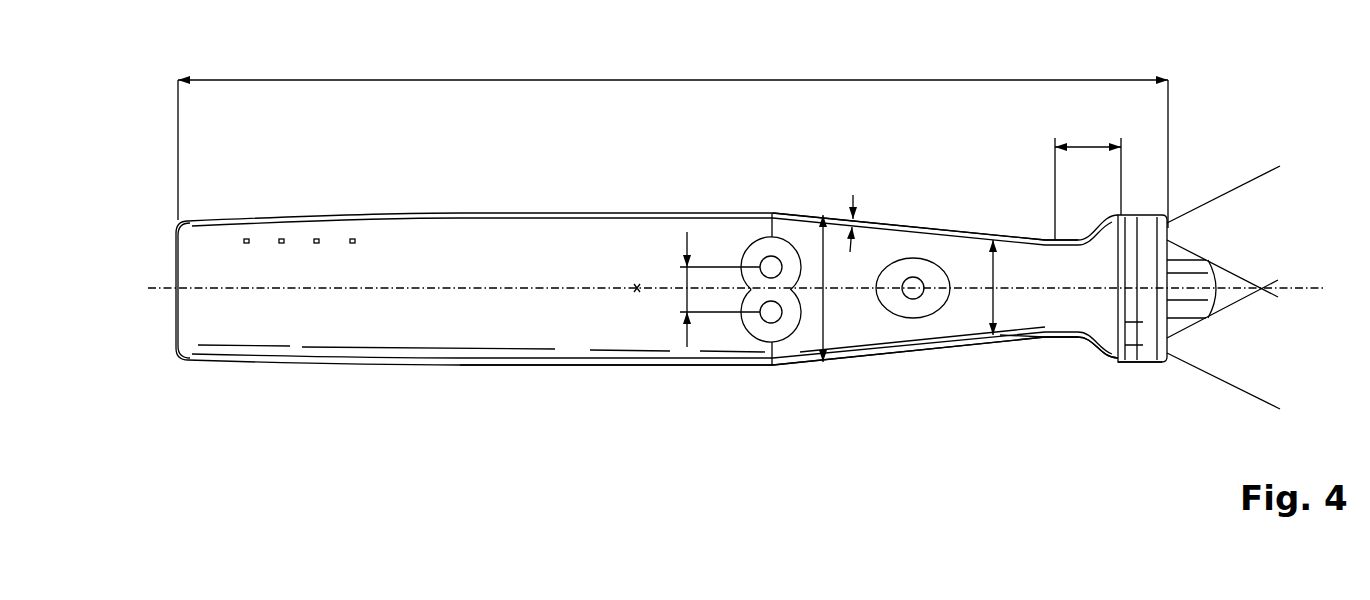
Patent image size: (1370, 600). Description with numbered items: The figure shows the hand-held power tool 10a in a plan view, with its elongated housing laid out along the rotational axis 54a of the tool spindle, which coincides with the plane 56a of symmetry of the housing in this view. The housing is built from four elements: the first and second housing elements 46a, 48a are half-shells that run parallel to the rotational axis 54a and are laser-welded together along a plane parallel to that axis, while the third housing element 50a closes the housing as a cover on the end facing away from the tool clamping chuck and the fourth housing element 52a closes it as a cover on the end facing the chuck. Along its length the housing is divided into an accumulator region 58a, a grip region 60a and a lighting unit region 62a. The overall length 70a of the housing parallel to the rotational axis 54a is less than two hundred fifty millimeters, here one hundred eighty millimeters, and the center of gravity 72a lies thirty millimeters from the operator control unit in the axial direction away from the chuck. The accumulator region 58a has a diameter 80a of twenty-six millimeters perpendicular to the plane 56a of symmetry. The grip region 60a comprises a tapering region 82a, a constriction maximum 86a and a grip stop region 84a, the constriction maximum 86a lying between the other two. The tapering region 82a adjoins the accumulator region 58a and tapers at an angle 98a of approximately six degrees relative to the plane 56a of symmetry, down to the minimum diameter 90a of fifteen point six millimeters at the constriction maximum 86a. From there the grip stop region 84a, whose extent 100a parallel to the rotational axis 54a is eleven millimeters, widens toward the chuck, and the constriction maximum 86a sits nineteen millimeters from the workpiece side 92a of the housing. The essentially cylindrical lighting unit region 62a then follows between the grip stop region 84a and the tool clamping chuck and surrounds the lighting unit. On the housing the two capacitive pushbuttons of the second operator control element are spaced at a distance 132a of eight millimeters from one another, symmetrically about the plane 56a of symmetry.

The hand-held power tool 10a is at (250, 440).
The first housing element 46a is at (455, 226).
The second housing element 48a is at (455, 353).
The third housing element 50a is at (174, 326).
The fourth housing element 52a is at (1145, 363).
The rotational axis 54a is at (1305, 282).
The plane of symmetry 56a is at (1223, 381).
The accumulator region 58a is at (512, 400).
The grip region 60a is at (995, 388).
The lighting unit region 62a is at (1140, 386).
The overall length 70a is at (672, 80).
The center of gravity 72a is at (643, 300).
The diameter of accumulator region 80a is at (824, 320).
The tapering region 82a is at (908, 356).
The grip stop region 84a is at (1098, 353).
The constriction maximum 86a is at (1057, 346).
The minimum diameter 90a is at (990, 305).
The workpiece side 92a is at (1182, 226).
The taper angle 98a is at (855, 195).
The extent of grip stop region 100a is at (1087, 147).
The distance between pushbuttons 132a is at (680, 306).